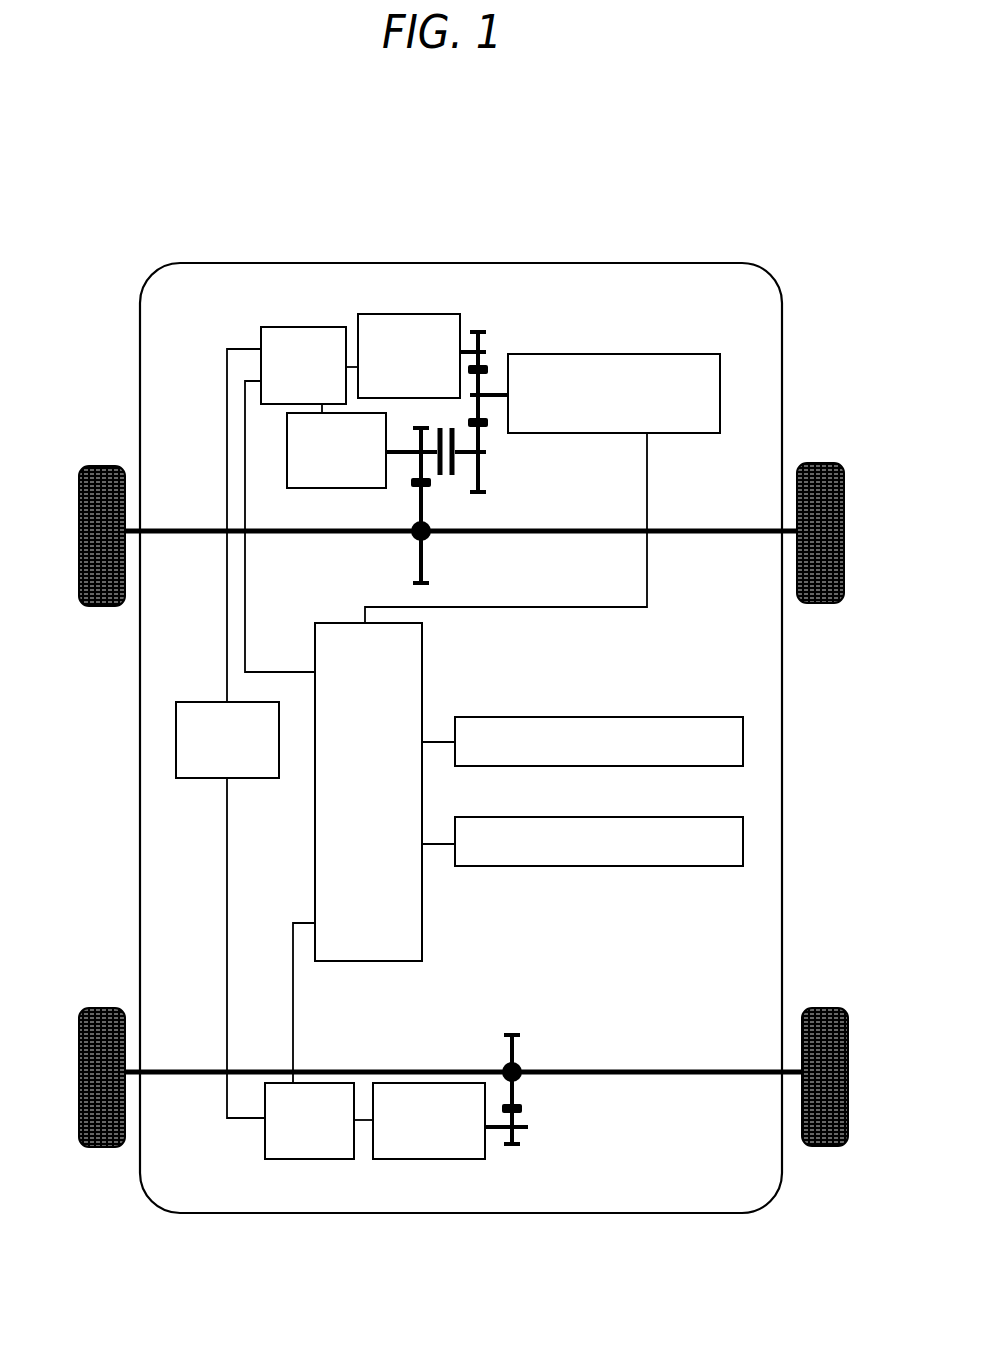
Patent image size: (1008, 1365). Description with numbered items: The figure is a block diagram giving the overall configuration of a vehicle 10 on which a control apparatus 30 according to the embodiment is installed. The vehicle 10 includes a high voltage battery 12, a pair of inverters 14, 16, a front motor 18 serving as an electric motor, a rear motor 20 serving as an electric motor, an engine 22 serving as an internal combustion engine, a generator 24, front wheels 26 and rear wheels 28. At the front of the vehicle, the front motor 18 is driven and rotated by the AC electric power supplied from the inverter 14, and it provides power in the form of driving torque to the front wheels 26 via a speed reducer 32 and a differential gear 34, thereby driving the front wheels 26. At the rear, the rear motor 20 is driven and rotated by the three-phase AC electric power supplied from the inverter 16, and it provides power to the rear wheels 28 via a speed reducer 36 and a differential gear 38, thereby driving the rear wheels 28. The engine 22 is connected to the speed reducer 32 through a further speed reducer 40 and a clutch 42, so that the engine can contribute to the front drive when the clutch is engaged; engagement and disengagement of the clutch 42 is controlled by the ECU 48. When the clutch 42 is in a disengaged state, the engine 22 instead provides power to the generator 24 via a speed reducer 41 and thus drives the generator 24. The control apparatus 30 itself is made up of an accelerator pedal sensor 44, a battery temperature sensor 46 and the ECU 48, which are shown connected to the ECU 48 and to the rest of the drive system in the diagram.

The vehicle 10 is at (549, 195).
The high voltage battery 12 is at (194, 702).
The inverter 14 is at (325, 327).
The inverter 16 is at (337, 1080).
The front motor 18 is at (330, 488).
The rear motor 20 is at (435, 1083).
The engine 22 is at (708, 354).
The generator 24 is at (443, 314).
The front wheels 26 is at (100, 466).
The rear wheels 28 is at (92, 1008).
The control apparatus 30 is at (510, 447).
The speed reducer 32 is at (429, 485).
The differential gear 34 is at (431, 536).
The speed reducer 36 is at (522, 1104).
The differential gear 38 is at (520, 1065).
The speed reducer 40 is at (486, 418).
The speed reducer 41 is at (486, 369).
The clutch 42 is at (453, 462).
The accelerator pedal sensor 44 is at (743, 731).
The battery temperature sensor 46 is at (743, 826).
The ECU 48 is at (343, 623).